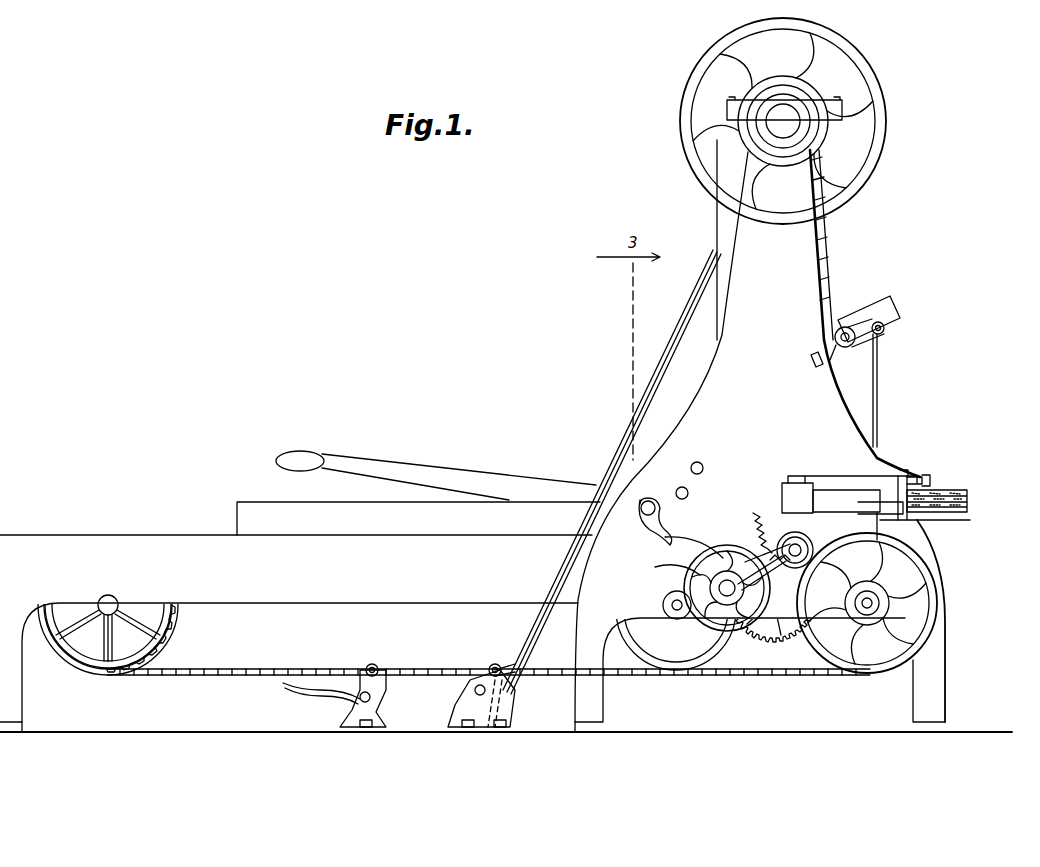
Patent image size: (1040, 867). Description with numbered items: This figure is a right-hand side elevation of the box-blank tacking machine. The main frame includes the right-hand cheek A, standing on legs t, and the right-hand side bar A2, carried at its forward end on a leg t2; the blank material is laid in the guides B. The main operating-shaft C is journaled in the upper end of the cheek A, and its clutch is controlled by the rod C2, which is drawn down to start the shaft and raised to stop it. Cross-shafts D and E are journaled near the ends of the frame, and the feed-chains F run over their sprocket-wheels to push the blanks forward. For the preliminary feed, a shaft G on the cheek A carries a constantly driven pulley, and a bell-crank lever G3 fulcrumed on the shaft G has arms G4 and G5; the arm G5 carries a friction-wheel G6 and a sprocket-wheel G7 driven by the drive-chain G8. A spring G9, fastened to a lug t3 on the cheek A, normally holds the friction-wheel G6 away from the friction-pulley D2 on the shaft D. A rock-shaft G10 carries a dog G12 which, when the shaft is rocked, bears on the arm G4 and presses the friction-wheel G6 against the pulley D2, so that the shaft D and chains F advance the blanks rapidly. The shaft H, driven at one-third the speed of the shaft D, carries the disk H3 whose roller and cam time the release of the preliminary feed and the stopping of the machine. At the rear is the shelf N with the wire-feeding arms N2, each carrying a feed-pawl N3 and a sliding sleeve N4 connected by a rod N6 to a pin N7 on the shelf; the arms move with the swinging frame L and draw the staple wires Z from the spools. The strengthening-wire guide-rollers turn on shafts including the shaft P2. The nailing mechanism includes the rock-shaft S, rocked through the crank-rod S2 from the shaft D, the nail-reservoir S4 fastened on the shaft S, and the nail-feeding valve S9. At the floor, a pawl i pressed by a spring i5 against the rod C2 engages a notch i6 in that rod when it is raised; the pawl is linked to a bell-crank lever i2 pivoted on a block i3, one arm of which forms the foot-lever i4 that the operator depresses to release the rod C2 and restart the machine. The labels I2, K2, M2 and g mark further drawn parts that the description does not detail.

The right-hand cheek A is at (785, 404).
The right-hand bar A2 is at (296, 633).
The guides B is at (265, 501).
The main operating-shaft C is at (785, 135).
The rod C2 is at (692, 303).
The cross-shaft D is at (872, 610).
The friction drum or pulley D2 is at (948, 613).
The cross-shaft E is at (110, 596).
The feed-chains F is at (234, 674).
The shaft G is at (712, 587).
The bell-crank lever G3 is at (663, 567).
The arm G4 is at (696, 532).
The arm G5 is at (768, 548).
The friction-wheel G6 is at (814, 545).
The sprocket-wheel G7 is at (806, 530).
The drive-chain G8 is at (763, 575).
The spring G9 is at (780, 533).
The rock-shaft G10 is at (648, 501).
The dog G12 is at (650, 530).
The shaft H is at (664, 603).
The disk or wheel H3 is at (708, 647).
The guide strip I2 is at (828, 240).
The gear wheel K2 is at (781, 642).
The swinging frame L is at (717, 218).
The bearing cap M2 is at (793, 80).
The shelf N is at (970, 521).
The arms N2 is at (862, 497).
The wire-engaging feed-pawl N3 is at (968, 497).
The sleeve N4 is at (800, 488).
The rod N6 is at (843, 477).
The pin N7 is at (912, 478).
The shaft P2 is at (688, 490).
The rock-shaft S is at (845, 347).
The crank-rod S2 is at (879, 403).
The nail-reservoir S4 is at (889, 294).
The nail-feeding valve S9 is at (811, 356).
The wires Z is at (895, 510).
The pulley g is at (707, 654).
The pawl i is at (494, 666).
The bell-crank lever i2 is at (363, 688).
The block i3 is at (516, 710).
The treadle or foot-lever i4 is at (326, 699).
The spring i5 is at (512, 689).
The notch i6 is at (508, 664).
The legs t is at (604, 710).
The legs t2 is at (34, 712).
The lug t3 is at (757, 519).